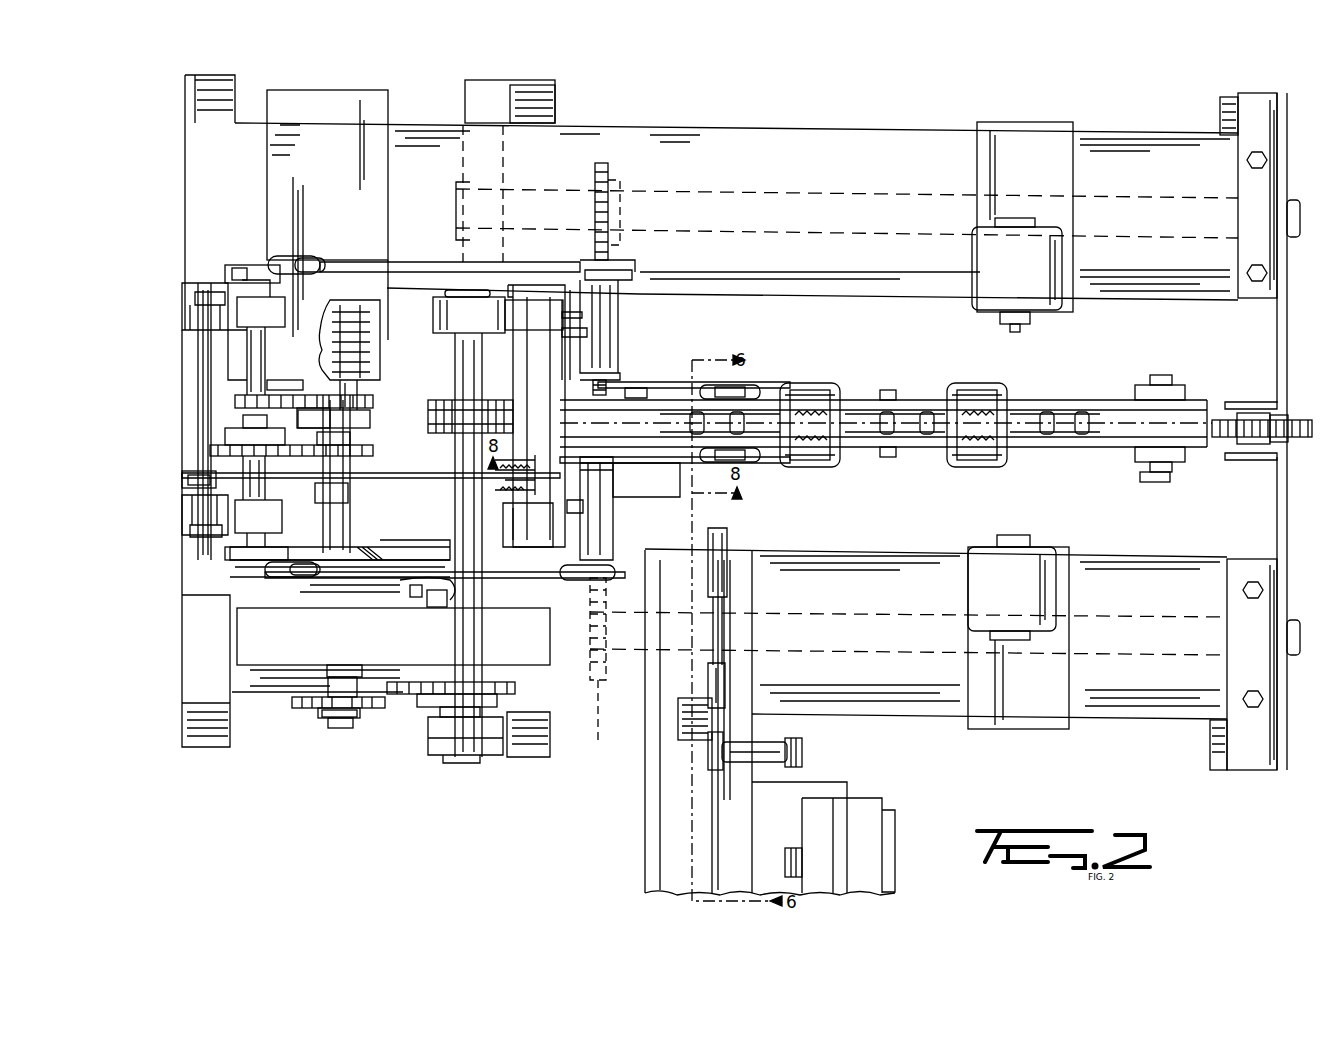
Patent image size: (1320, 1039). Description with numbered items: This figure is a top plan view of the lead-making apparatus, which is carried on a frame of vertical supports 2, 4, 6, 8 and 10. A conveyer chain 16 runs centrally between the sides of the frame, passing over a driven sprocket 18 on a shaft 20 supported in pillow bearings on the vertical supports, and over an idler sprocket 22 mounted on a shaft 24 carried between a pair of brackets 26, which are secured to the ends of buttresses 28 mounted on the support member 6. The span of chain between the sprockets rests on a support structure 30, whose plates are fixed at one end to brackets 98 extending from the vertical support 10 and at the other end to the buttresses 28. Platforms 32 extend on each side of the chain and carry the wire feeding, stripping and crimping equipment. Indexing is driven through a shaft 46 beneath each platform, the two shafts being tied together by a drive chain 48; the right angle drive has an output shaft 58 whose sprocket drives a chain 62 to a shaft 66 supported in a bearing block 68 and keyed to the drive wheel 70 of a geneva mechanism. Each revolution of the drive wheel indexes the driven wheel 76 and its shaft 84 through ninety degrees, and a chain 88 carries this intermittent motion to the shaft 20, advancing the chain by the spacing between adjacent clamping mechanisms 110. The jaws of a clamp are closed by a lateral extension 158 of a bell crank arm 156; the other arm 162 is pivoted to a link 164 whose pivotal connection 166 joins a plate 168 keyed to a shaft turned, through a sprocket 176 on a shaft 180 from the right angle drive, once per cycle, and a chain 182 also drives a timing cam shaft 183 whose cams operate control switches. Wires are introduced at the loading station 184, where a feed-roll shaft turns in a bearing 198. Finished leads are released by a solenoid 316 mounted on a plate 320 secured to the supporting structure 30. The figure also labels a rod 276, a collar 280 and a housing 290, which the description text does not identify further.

The vertical support 2 is at (188, 80).
The vertical support 4 is at (525, 100).
The vertical support member 6 is at (1220, 118).
The vertical support 8 is at (190, 288).
The vertical support member 10 is at (540, 312).
The conveyer chain 16 is at (915, 412).
The driven sprocket 18 is at (425, 416).
The shaft 20 is at (457, 452).
The idler sprocket 22 is at (1308, 437).
The shaft 24 is at (1258, 448).
The bracket 26 is at (1243, 400).
The buttress 28 is at (1277, 333).
The support structure 30 is at (858, 395).
The platform 32 is at (902, 148).
The shaft 46 is at (800, 193).
The drive chain 48 is at (602, 163).
The output shaft 58 is at (323, 720).
The chain 62 is at (310, 710).
The shaft 66 is at (342, 728).
The bearing block 68 is at (343, 642).
The drive wheel 70 is at (375, 548).
The driven wheel 76 is at (445, 605).
The shaft 84 is at (445, 610).
The chain 88 is at (415, 695).
The bracket 98 is at (540, 378).
The clamping mechanism 110 is at (812, 378).
The arm 156 is at (668, 372).
The lateral extension 158 is at (735, 385).
The arm 162 is at (630, 285).
The link 164 is at (435, 262).
The pivotal connection 166 is at (295, 262).
The plate 168 is at (255, 270).
The sprocket 176 is at (210, 448).
The shaft 180 is at (340, 528).
The chain 182 is at (290, 395).
The timing cam shaft 183 is at (380, 378).
The loading station 184 is at (628, 830).
The bearing 198 is at (780, 742).
The rod 276 is at (435, 478).
The collar 280 is at (182, 472).
The motor 290 is at (1040, 268).
The solenoid 316 is at (1155, 482).
The plate 320 is at (1140, 400).